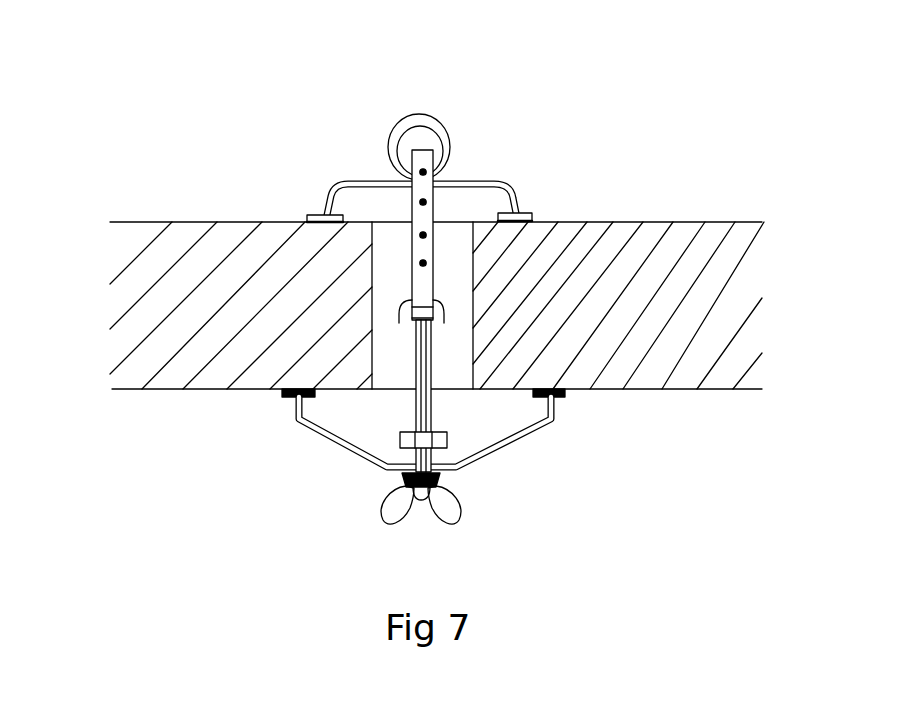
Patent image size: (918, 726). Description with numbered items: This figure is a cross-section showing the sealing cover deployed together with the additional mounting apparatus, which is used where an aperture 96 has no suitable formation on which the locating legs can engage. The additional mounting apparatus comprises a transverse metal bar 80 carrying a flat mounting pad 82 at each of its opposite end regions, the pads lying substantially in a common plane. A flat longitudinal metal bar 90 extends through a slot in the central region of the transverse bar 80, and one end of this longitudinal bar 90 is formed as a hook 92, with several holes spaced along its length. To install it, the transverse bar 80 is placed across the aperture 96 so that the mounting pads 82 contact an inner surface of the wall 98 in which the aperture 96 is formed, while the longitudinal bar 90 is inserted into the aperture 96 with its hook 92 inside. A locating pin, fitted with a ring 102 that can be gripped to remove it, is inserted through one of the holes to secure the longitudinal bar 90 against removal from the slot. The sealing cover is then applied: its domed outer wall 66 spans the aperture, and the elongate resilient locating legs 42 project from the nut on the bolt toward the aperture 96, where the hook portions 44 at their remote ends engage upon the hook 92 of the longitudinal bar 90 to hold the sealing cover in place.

The ring 102 is at (450, 146).
The transverse metal bar 80 is at (470, 181).
The flat mounting pad 82 is at (310, 213).
The flat longitudinal metal bar 90 is at (412, 222).
The hook 92 is at (428, 305).
The aperture 96 is at (466, 346).
The wall 98 is at (661, 392).
The outer wall 66 is at (338, 447).
The locating leg 42 is at (434, 385).
The hook portion 44 is at (400, 323).